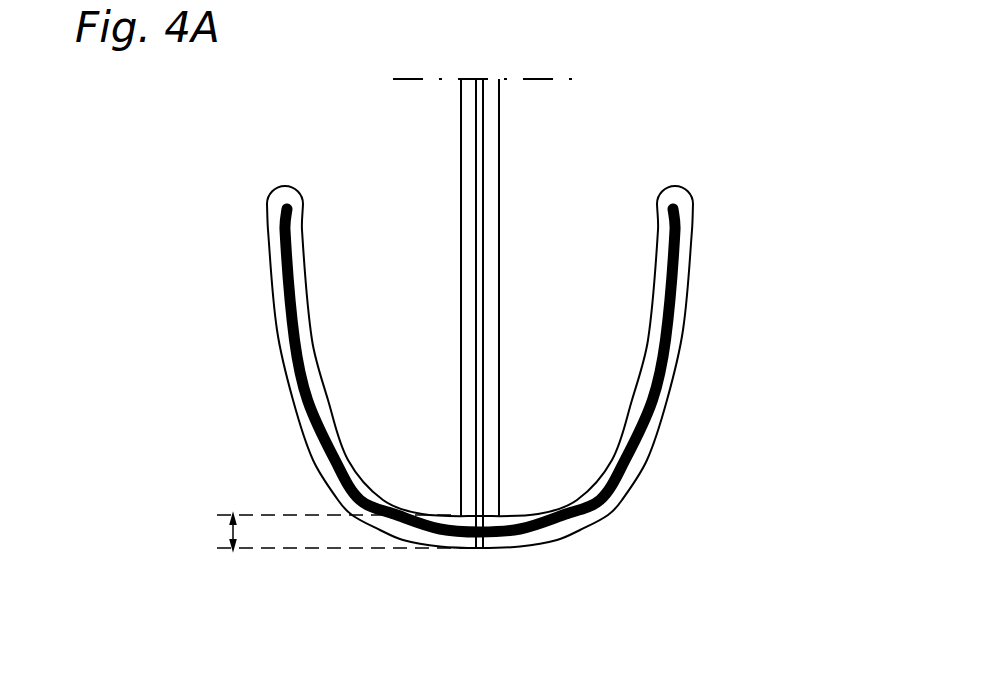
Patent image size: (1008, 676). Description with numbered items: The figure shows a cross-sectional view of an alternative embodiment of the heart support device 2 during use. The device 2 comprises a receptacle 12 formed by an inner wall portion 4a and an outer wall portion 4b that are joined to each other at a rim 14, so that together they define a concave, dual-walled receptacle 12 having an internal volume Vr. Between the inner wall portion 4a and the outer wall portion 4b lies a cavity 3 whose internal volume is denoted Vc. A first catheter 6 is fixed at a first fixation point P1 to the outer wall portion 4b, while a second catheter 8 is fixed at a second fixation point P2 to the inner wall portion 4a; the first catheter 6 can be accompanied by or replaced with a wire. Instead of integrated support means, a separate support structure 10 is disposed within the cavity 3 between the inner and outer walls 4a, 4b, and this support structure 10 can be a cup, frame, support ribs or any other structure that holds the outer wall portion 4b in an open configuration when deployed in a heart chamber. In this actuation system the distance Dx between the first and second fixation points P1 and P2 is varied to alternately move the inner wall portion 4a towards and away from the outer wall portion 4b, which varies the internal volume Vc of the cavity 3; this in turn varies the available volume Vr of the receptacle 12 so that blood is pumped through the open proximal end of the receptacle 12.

The heart support device 2 is at (172, 225).
The cavity 3 is at (303, 425).
The inner wall portion 4a is at (303, 232).
The outer wall portion 4b is at (653, 442).
The first catheter 6 is at (480, 127).
The second catheter 8 is at (498, 342).
The support structure 10 is at (678, 290).
The receptacle 12 is at (742, 364).
The rim 14 is at (283, 185).
The internal volume of the receptacle Vr is at (603, 222).
The internal volume of the cavity Vc is at (315, 337).
The first fixation point P1 is at (480, 549).
The second fixation point P2 is at (503, 512).
The distance between the first and second fixation points Dx is at (233, 532).